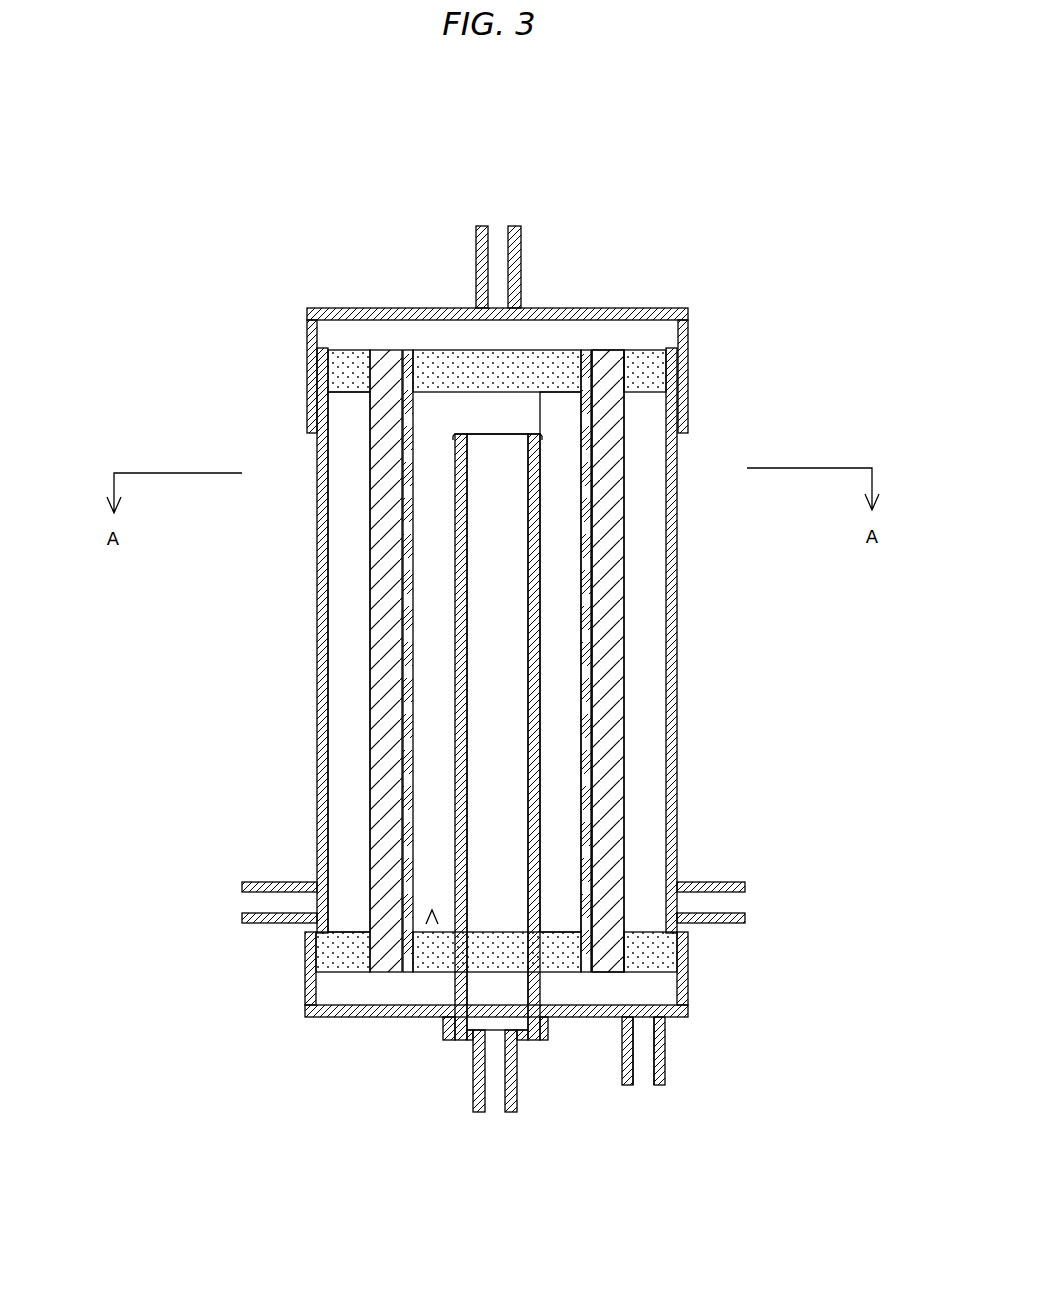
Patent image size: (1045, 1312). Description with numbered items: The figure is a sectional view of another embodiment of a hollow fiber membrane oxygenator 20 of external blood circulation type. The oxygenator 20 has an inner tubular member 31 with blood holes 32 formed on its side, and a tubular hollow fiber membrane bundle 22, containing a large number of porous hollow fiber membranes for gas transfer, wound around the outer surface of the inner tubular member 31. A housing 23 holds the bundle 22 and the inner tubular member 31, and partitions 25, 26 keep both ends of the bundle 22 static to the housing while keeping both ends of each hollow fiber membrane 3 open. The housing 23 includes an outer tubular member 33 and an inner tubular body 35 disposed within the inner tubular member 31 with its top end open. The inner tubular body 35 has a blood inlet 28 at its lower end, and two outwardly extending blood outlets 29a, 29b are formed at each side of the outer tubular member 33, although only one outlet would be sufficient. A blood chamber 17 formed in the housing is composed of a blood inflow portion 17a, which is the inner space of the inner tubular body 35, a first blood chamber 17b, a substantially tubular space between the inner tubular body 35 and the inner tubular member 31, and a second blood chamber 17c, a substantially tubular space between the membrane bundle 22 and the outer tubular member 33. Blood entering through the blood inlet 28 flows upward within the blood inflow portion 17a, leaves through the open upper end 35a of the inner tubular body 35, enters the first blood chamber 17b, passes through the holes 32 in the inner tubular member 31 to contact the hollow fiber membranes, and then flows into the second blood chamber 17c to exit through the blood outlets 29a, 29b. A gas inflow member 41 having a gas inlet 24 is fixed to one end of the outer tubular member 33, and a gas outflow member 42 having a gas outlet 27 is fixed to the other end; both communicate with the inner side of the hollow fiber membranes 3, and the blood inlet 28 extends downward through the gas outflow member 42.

The hollow fiber membrane 3 is at (607, 820).
The blood chamber 17 is at (432, 912).
The blood inflow portion 17a is at (497, 968).
The first blood chamber 17b is at (558, 722).
The second blood chamber 17c is at (340, 683).
The oxygenator 20 is at (693, 254).
The tubular hollow fiber membrane bundle 22 is at (383, 845).
The housing 23 is at (698, 673).
The gas inlet 24 is at (495, 235).
The partition 25 is at (348, 373).
The partition 26 is at (325, 960).
The gas outlet 27 is at (643, 1067).
The blood inlet 28 is at (495, 1098).
The blood outlet 29a is at (253, 903).
The blood outlet 29b is at (733, 897).
The inner tubular member 31 is at (415, 615).
The blood holes 32 is at (400, 540).
The outer tubular member 33 is at (322, 750).
The inner tubular body 35 is at (540, 867).
The upper end 35a is at (490, 434).
The gas inflow member 41 is at (592, 315).
The gas outflow member 42 is at (662, 1052).